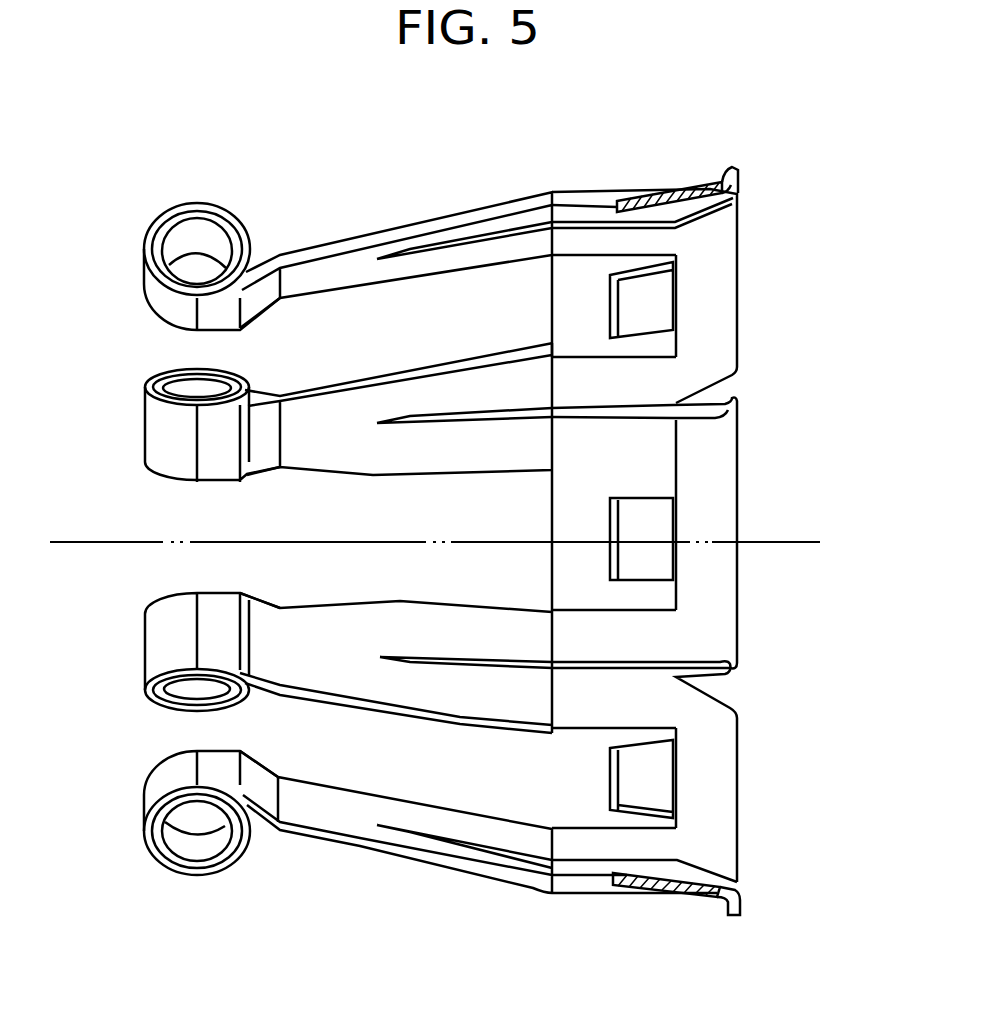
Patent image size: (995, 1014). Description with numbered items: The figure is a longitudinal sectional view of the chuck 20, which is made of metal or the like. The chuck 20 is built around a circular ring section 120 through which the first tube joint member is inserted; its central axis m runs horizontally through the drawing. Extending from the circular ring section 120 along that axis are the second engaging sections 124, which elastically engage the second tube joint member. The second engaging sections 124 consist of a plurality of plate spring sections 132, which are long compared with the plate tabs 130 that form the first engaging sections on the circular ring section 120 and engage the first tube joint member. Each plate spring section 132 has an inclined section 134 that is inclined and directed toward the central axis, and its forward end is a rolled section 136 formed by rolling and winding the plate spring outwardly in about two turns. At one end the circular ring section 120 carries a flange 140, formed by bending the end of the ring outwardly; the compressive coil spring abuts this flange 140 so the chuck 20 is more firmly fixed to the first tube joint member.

The chuck 20 is at (258, 93).
The circular ring section 120 is at (717, 312).
The second engaging sections 124 is at (147, 848).
The plate tabs 130 is at (643, 519).
The plate spring sections 132 is at (485, 873).
The inclined section 134 is at (342, 840).
The rolled section 136 is at (190, 875).
The flange 140 is at (730, 165).